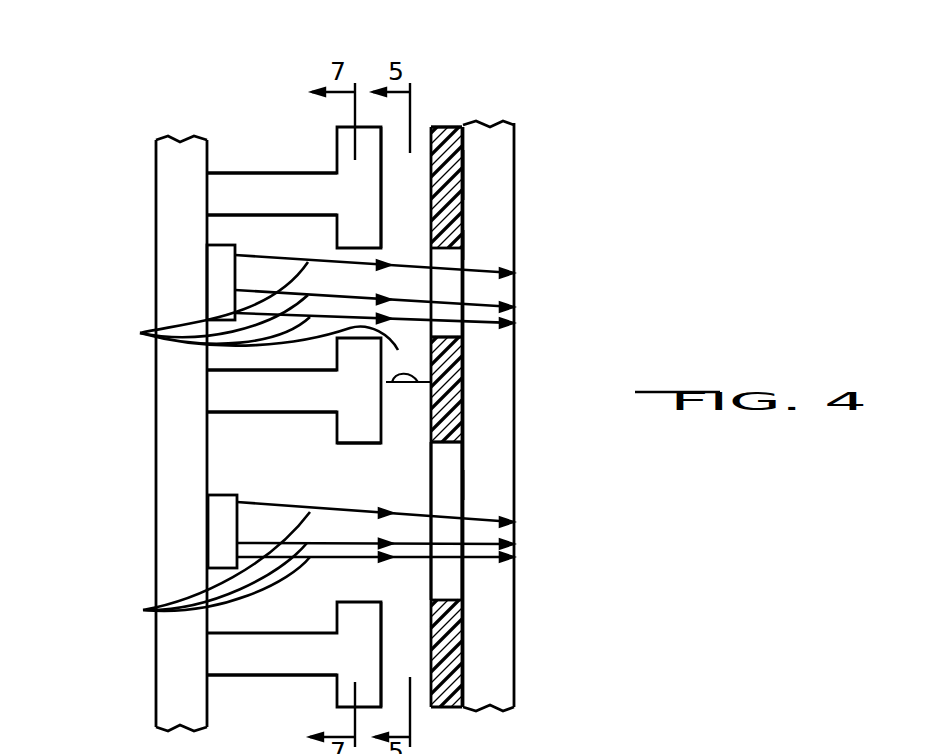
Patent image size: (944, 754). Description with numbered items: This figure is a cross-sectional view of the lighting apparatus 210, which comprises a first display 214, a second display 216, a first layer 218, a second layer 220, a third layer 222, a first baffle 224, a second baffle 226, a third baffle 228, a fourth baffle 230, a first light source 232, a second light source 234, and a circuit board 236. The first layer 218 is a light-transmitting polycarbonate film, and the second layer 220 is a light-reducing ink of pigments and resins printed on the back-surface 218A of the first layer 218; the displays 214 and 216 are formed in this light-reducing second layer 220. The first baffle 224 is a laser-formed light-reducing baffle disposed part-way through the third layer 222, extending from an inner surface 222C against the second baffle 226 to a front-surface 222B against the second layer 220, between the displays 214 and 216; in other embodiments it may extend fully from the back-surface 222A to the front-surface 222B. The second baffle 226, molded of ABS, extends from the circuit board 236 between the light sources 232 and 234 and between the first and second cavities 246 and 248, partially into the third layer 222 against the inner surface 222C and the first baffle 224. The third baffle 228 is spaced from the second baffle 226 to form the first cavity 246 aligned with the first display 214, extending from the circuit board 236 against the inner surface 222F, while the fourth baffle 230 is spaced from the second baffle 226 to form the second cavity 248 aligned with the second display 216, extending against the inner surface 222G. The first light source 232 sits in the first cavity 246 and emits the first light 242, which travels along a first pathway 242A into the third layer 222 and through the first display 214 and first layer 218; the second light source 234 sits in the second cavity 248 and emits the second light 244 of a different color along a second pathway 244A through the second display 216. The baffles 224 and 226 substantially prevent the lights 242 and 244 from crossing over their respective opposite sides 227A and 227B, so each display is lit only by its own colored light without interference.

The lighting apparatus 210 is at (582, 238).
The first display 214 is at (453, 257).
The second display 216 is at (452, 485).
The first layer 218 is at (478, 140).
The back-surface 218A is at (463, 167).
The second layer 220 is at (443, 127).
The third layer 222 is at (422, 128).
The back-surface 222A is at (332, 453).
The front-surface 222B is at (430, 417).
The inner surface 222C is at (382, 362).
The inner surface 222F is at (382, 207).
The inner surface 222G is at (380, 647).
The first baffle 224 is at (400, 382).
The second baffle 226 is at (268, 397).
The opposite side 227A is at (303, 361).
The opposite side 227B is at (386, 382).
The third baffle 228 is at (247, 187).
The fourth baffle 230 is at (263, 650).
The first light source 232 is at (238, 268).
The second light source 234 is at (238, 525).
The circuit board 236 is at (165, 437).
The first light 242 is at (271, 303).
The first pathway 242A is at (143, 333).
The second light 244 is at (271, 564).
The second pathway 244A is at (143, 610).
The first cavity 246 is at (240, 230).
The second cavity 248 is at (227, 453).